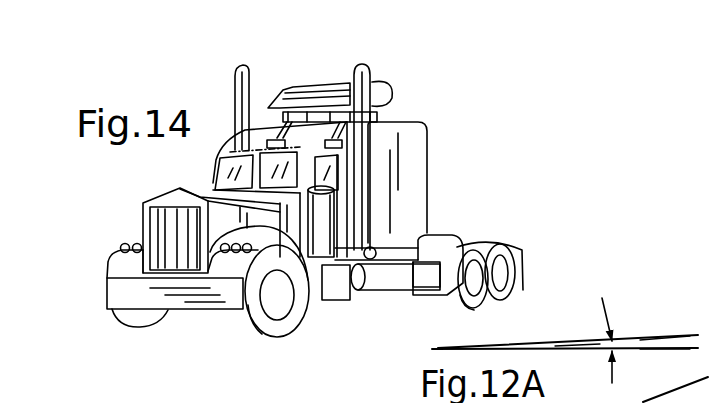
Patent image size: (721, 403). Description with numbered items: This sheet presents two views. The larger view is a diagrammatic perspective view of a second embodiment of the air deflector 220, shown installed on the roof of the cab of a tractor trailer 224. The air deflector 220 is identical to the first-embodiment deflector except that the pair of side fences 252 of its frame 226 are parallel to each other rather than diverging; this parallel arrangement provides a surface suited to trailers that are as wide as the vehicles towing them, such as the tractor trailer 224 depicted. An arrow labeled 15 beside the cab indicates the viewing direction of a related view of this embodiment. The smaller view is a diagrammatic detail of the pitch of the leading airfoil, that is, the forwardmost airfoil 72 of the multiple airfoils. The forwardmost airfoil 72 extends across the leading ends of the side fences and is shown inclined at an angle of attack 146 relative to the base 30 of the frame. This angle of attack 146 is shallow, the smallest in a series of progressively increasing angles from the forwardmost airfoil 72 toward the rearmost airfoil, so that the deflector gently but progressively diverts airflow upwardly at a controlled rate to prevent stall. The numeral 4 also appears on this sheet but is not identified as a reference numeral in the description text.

In FIG. 14, the pair of side fences 252 is at (281, 88).
In FIG. 14, the air deflector 220 is at (322, 75).
In FIG. 14, the frame 226 is at (390, 112).
In FIG. 14, the tractor trailer 224 is at (432, 185).
In FIG. 14, the viewing direction arrow 15 is at (90, 226).
In FIG. 12A, the angle of attack 146 is at (572, 340).
In FIG. 12A, the forwardmost airfoil 72 is at (661, 336).
In FIG. 12A, the base 30 is at (669, 351).
In FIG. 12A, the sheet 4 is at (369, 388).